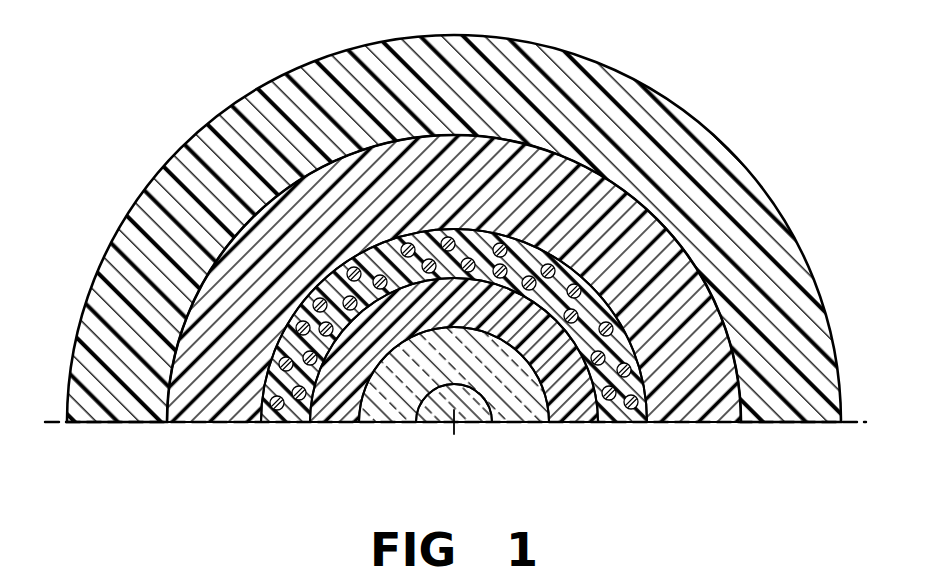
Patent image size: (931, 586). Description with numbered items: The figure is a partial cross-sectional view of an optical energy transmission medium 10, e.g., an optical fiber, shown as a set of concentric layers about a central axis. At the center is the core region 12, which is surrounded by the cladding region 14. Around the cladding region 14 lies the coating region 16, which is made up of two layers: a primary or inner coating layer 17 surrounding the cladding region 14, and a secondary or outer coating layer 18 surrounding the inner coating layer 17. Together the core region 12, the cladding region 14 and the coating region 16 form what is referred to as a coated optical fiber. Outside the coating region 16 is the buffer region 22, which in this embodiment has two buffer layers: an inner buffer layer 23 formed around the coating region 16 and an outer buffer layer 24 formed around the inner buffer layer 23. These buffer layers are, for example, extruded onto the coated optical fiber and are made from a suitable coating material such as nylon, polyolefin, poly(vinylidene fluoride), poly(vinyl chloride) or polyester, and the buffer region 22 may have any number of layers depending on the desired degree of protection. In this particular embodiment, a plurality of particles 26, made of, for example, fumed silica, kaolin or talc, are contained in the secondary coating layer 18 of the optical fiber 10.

The optical energy transmission medium 10 is at (204, 52).
The core region 12 is at (436, 410).
The cladding region 14 is at (383, 408).
The coating region 16 is at (453, 354).
The primary or inner coating layer 17 is at (331, 408).
The secondary or outer coating layer 18 is at (285, 408).
The buffer region 22 is at (454, 284).
The inner buffer layer 23 is at (454, 303).
The outer buffer layer 24 is at (116, 408).
The particles 26 is at (529, 276).